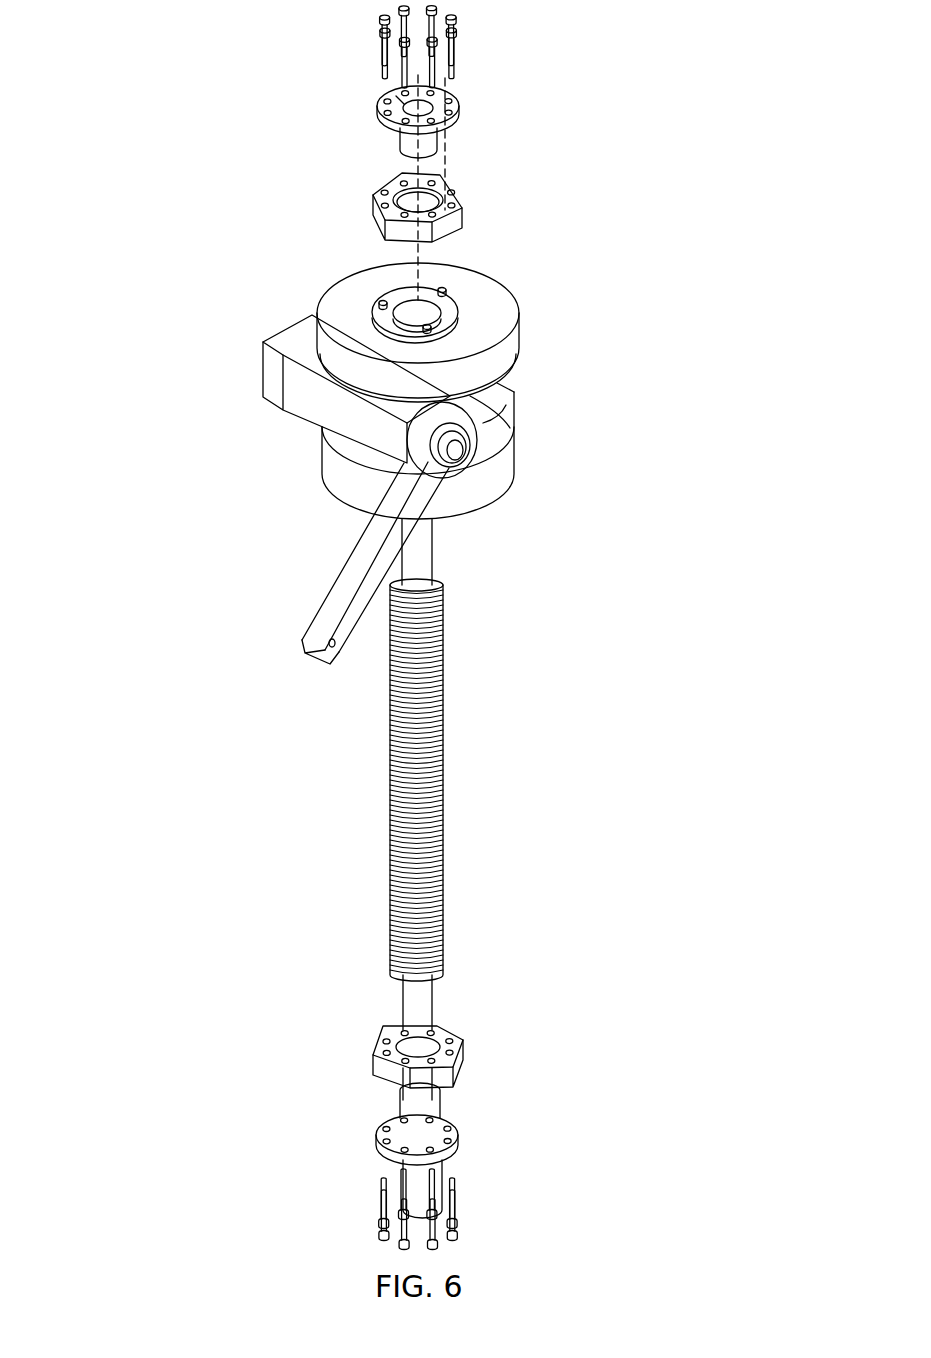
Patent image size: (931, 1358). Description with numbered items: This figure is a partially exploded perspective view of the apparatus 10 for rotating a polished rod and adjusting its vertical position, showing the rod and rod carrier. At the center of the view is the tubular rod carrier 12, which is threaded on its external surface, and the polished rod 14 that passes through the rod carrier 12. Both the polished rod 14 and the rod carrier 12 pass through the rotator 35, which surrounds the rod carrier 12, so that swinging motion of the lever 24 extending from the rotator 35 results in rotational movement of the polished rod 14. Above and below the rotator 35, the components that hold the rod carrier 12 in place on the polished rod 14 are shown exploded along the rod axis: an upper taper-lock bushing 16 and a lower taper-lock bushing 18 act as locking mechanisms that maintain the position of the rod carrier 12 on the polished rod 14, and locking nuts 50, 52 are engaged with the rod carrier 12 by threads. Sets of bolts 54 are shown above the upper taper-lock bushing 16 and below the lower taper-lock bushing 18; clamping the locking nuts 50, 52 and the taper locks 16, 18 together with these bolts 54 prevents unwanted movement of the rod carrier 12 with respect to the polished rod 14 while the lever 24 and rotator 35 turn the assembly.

The apparatus 10 is at (92, 92).
The rod carrier 12 is at (445, 838).
The polished rod 14 is at (423, 1012).
The upper taper-lock bushing 16 is at (400, 135).
The lower taper-lock bushing 18 is at (430, 1122).
The lever 24 is at (343, 582).
The rotator 35 is at (512, 348).
The upper locking nut 50 is at (448, 222).
The lower locking nut 52 is at (455, 1057).
The bolts 54 is at (452, 48).